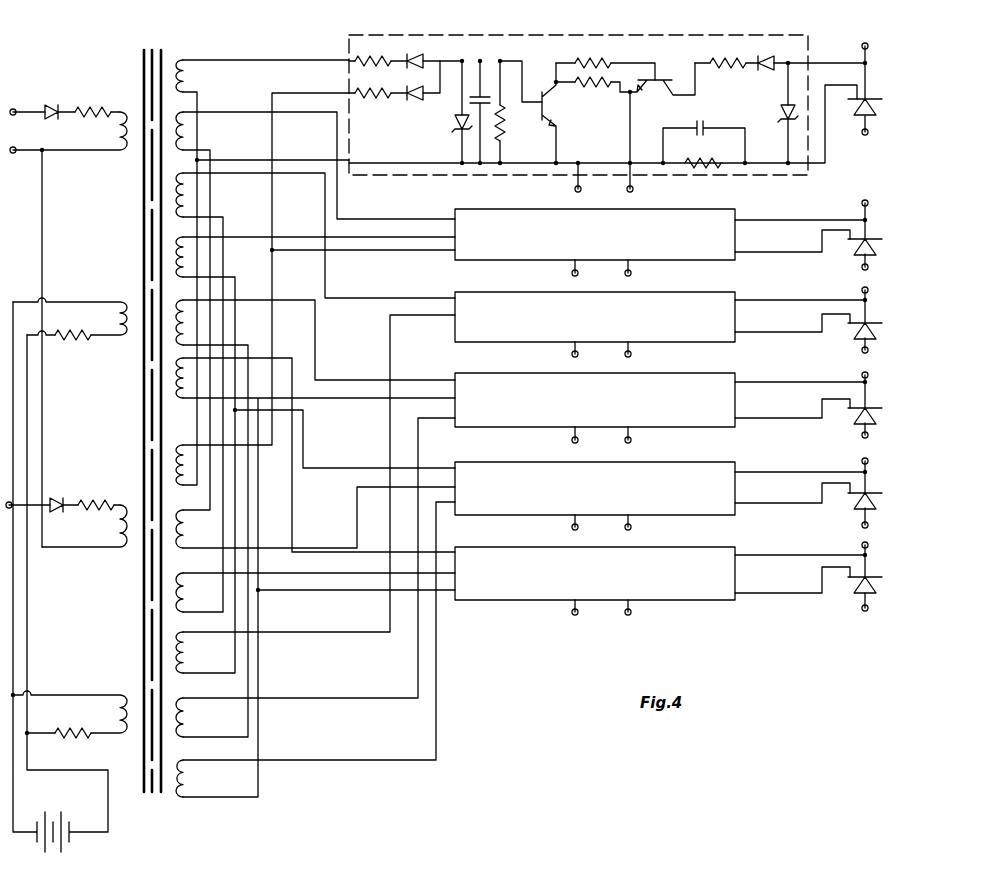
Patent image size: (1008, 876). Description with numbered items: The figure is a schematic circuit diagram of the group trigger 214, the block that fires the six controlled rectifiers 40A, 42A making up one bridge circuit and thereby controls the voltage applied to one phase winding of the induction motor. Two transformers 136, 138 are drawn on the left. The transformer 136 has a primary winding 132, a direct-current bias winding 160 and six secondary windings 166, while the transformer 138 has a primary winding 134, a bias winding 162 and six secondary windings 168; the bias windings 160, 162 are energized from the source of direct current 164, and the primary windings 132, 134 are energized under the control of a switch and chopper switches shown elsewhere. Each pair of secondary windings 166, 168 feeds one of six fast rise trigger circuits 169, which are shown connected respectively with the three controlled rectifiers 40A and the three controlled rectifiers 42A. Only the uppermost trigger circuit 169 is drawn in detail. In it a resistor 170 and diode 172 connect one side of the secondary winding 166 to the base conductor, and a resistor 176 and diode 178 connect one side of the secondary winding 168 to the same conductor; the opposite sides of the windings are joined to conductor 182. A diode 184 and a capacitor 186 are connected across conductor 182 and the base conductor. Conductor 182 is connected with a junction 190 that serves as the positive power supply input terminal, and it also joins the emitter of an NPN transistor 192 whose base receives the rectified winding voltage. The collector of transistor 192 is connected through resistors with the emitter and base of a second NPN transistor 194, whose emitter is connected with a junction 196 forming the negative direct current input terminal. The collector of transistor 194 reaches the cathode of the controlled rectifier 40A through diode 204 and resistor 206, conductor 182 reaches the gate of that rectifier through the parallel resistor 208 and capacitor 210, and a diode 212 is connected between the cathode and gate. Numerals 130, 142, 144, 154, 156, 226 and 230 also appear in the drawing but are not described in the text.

The controlled rectifier 40A is at (876, 108).
The controlled rectifier 42A is at (876, 403).
The conductor 130 is at (43, 422).
The primary winding 132 is at (134, 152).
The primary winding 134 is at (134, 548).
The transformer 136 is at (135, 94).
The transformer 138 is at (161, 794).
The diode 142 is at (52, 105).
The resistor 144 is at (100, 116).
The resistor 154 is at (94, 506).
The diode 156 is at (56, 502).
The bias winding 160 is at (132, 304).
The bias winding 162 is at (126, 694).
The source of direct current 164 is at (47, 860).
The secondary winding 166 is at (189, 82).
The secondary winding 168 is at (170, 374).
The fast rise trigger circuit 169 is at (578, 329).
The resistor 170 is at (366, 61).
The diode 172 is at (426, 61).
The resistor 176 is at (370, 114).
The diode 178 is at (415, 108).
The conductor 182 is at (392, 163).
The diode 184 is at (454, 134).
The capacitor 186 is at (484, 94).
The junction 190 is at (574, 188).
The NPN transistor 192 is at (548, 111).
The NPN transistor 194 is at (646, 96).
The junction 196 is at (634, 190).
The diode 204 is at (766, 68).
The resistor 206 is at (725, 68).
The resistor 208 is at (708, 168).
The capacitor 210 is at (708, 124).
The diode 212 is at (784, 112).
The group trigger 214 is at (442, 648).
The conductor 226 is at (143, 875).
The conductor 230 is at (233, 875).